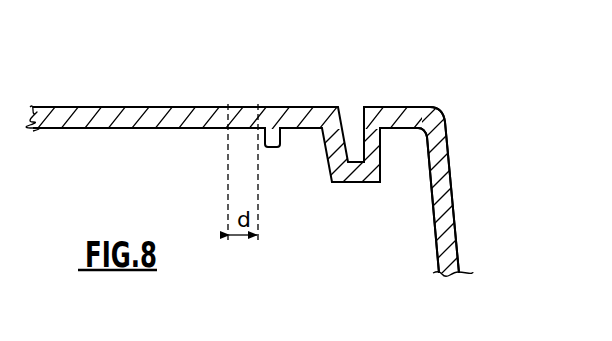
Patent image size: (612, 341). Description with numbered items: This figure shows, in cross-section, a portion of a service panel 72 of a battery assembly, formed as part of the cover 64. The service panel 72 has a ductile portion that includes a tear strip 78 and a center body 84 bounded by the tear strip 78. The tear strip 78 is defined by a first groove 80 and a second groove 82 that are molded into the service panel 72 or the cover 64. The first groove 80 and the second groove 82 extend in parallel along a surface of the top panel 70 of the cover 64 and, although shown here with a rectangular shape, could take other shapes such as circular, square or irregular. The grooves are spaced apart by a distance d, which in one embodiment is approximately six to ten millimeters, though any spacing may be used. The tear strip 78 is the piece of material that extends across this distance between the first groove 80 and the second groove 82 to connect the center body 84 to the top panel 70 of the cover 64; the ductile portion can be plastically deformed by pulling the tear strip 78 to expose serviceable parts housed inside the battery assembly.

The cover 64 is at (447, 208).
The top panel 70 is at (115, 107).
The service panel 72 is at (188, 80).
The tear strip 78 is at (240, 129).
The first groove 80 is at (228, 107).
The second groove 82 is at (260, 107).
The center body 84 is at (89, 116).